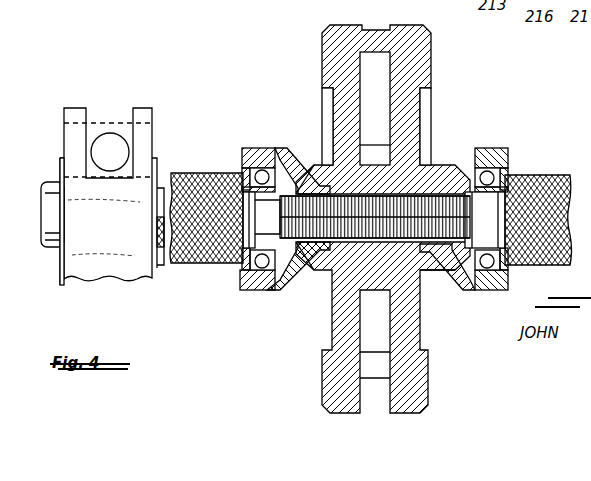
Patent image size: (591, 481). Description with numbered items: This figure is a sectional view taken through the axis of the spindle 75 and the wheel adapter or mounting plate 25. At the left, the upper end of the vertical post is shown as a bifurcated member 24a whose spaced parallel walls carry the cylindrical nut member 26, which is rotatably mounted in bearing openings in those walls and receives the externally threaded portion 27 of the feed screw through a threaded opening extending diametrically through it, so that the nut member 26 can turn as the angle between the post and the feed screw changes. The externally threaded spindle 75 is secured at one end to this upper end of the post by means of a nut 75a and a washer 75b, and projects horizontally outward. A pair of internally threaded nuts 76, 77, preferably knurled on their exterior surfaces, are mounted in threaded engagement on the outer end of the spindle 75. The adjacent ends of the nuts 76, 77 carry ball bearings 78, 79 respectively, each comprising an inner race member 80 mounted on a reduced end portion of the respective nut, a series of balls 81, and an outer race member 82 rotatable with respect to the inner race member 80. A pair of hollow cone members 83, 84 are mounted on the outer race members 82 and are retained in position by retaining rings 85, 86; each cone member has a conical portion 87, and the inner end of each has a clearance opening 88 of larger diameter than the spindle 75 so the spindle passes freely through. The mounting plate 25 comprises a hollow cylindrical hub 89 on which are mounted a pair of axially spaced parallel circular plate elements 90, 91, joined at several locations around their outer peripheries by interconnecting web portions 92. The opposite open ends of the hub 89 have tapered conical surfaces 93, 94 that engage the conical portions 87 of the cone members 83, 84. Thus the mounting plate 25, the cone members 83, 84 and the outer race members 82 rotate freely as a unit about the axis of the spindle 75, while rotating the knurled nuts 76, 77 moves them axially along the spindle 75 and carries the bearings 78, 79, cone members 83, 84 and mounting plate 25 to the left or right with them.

The wheel adapter or mounting plate 25 is at (436, 74).
The interconnecting web portions 92 is at (372, 38).
The circular plate element 90 is at (328, 96).
The circular plate element 91 is at (425, 119).
The tapered conical surface 93 is at (304, 160).
The clearance opening 88 is at (305, 190).
The cone member 83 is at (270, 292).
The conical portion 87 is at (290, 262).
The hollow cylindrical hub 89 is at (444, 275).
The cone member 84 is at (480, 298).
The outer race member 82 is at (252, 160).
The balls 81 is at (262, 168).
The inner race member 80 is at (246, 182).
The retaining ring 85 is at (246, 290).
The tapered conical surface 94 is at (466, 166).
The retaining ring 86 is at (504, 272).
The ball bearing 78 is at (244, 250).
The ball bearing 79 is at (500, 200).
The spindle 75 is at (375, 238).
The nut 76 is at (188, 172).
The nut 77 is at (560, 176).
The bifurcated member 24a is at (122, 280).
The nut member 26 is at (100, 125).
The externally threaded portion 27 is at (113, 143).
The nut 75a is at (54, 248).
The washer 75b is at (60, 160).